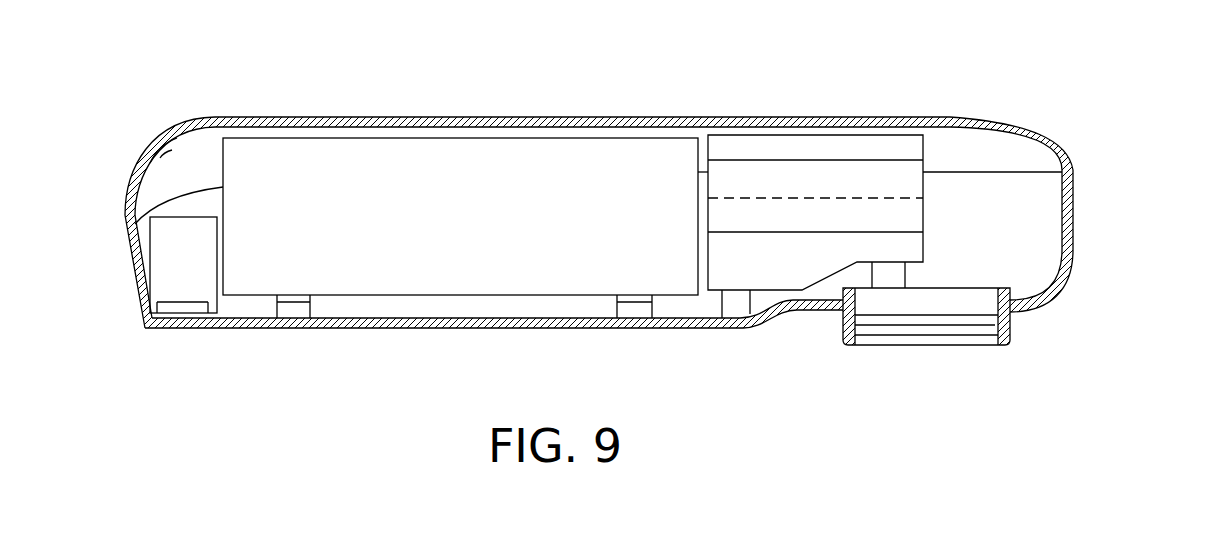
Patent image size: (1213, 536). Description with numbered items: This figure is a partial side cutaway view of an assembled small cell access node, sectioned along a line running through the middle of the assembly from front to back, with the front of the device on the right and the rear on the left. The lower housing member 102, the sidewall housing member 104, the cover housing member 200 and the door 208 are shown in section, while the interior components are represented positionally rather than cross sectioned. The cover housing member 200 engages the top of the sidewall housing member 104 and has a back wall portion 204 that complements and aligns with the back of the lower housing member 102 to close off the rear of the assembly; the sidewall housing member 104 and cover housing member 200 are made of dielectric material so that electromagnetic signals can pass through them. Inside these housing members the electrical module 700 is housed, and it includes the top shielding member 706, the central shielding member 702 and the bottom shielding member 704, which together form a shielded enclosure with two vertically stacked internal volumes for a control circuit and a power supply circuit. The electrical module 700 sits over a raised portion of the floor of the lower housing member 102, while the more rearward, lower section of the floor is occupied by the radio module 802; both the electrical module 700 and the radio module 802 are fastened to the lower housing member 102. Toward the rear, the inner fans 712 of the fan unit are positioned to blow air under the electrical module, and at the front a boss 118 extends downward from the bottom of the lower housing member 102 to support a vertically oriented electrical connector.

The lower housing member 102 is at (417, 336).
The sidewall housing member 104 is at (1082, 205).
The boss 118 is at (1010, 345).
The cover housing member 200 is at (694, 110).
The back wall portion 204 is at (135, 150).
The access door 208 is at (262, 117).
The electrical module 700 is at (890, 139).
The central shielding member 702 is at (905, 170).
The bottom shielding member 704 is at (782, 258).
The top shielding member 706 is at (818, 148).
The inner fans 712 is at (182, 275).
The radio module 802 is at (532, 160).